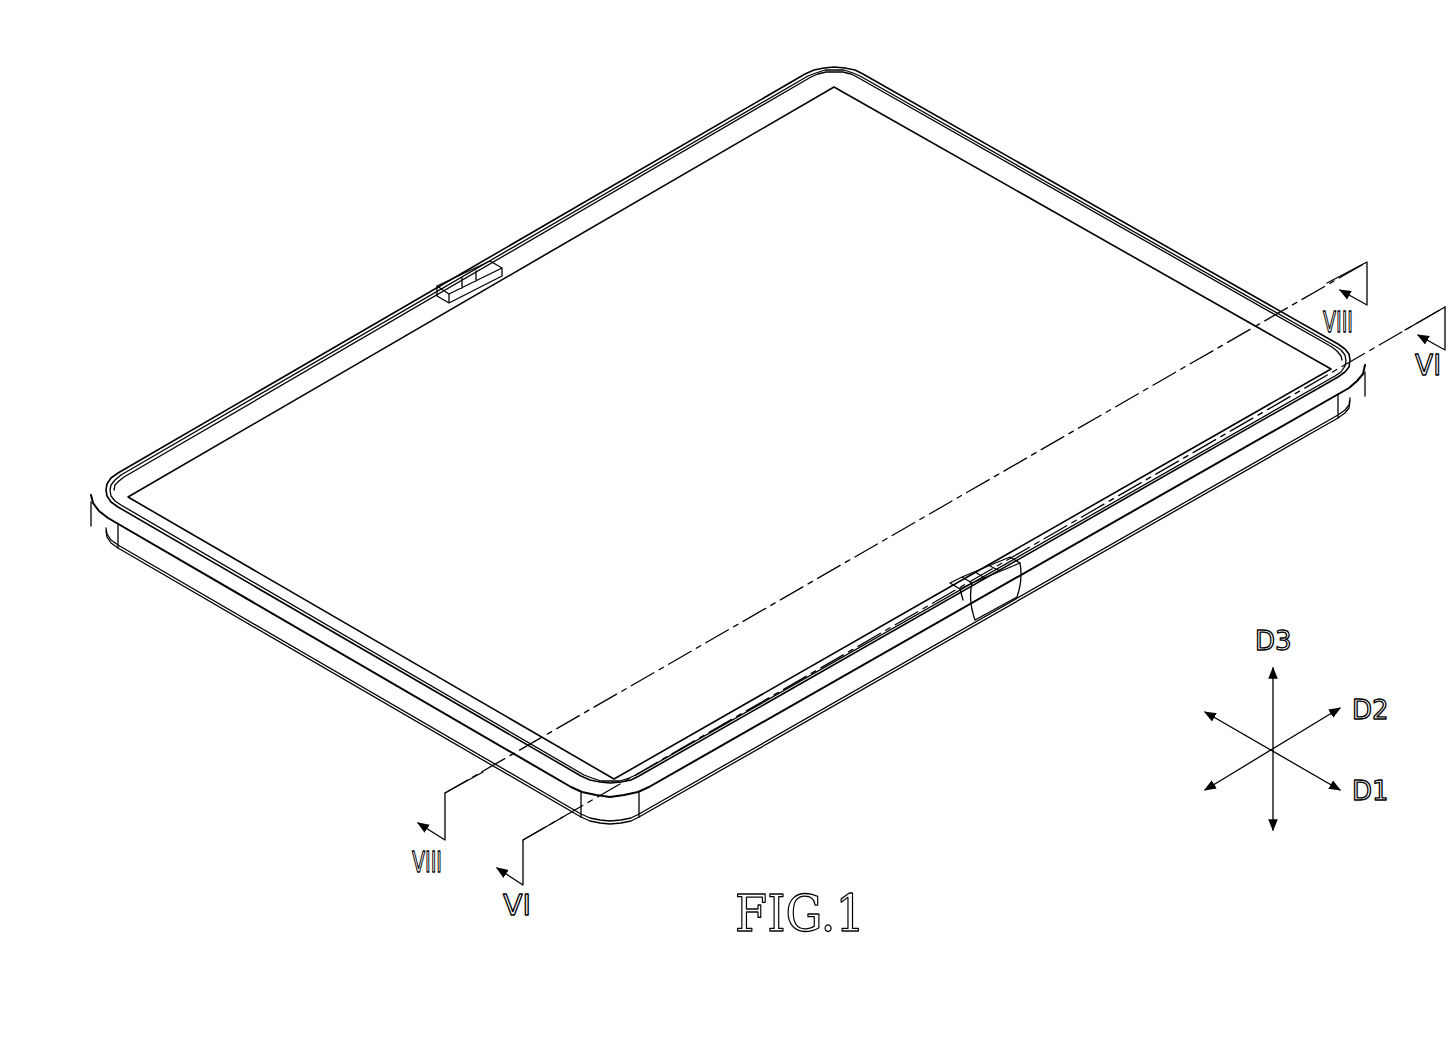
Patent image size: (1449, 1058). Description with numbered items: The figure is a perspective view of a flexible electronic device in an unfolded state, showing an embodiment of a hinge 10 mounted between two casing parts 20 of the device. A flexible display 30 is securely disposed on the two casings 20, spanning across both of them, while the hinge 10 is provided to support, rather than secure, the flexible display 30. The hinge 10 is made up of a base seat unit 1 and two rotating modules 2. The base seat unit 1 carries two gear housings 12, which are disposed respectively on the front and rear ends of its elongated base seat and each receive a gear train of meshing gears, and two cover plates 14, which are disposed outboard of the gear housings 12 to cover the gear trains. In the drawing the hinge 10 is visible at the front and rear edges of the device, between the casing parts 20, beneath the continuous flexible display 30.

The base seat unit 1 is at (728, 445).
The rotating modules 2 is at (990, 562).
The hinge 10 is at (1028, 660).
The gear housings 12 is at (1003, 600).
The cover plates 14 is at (1000, 607).
The casing parts 20 is at (1205, 497).
The flexible display 30 is at (672, 262).